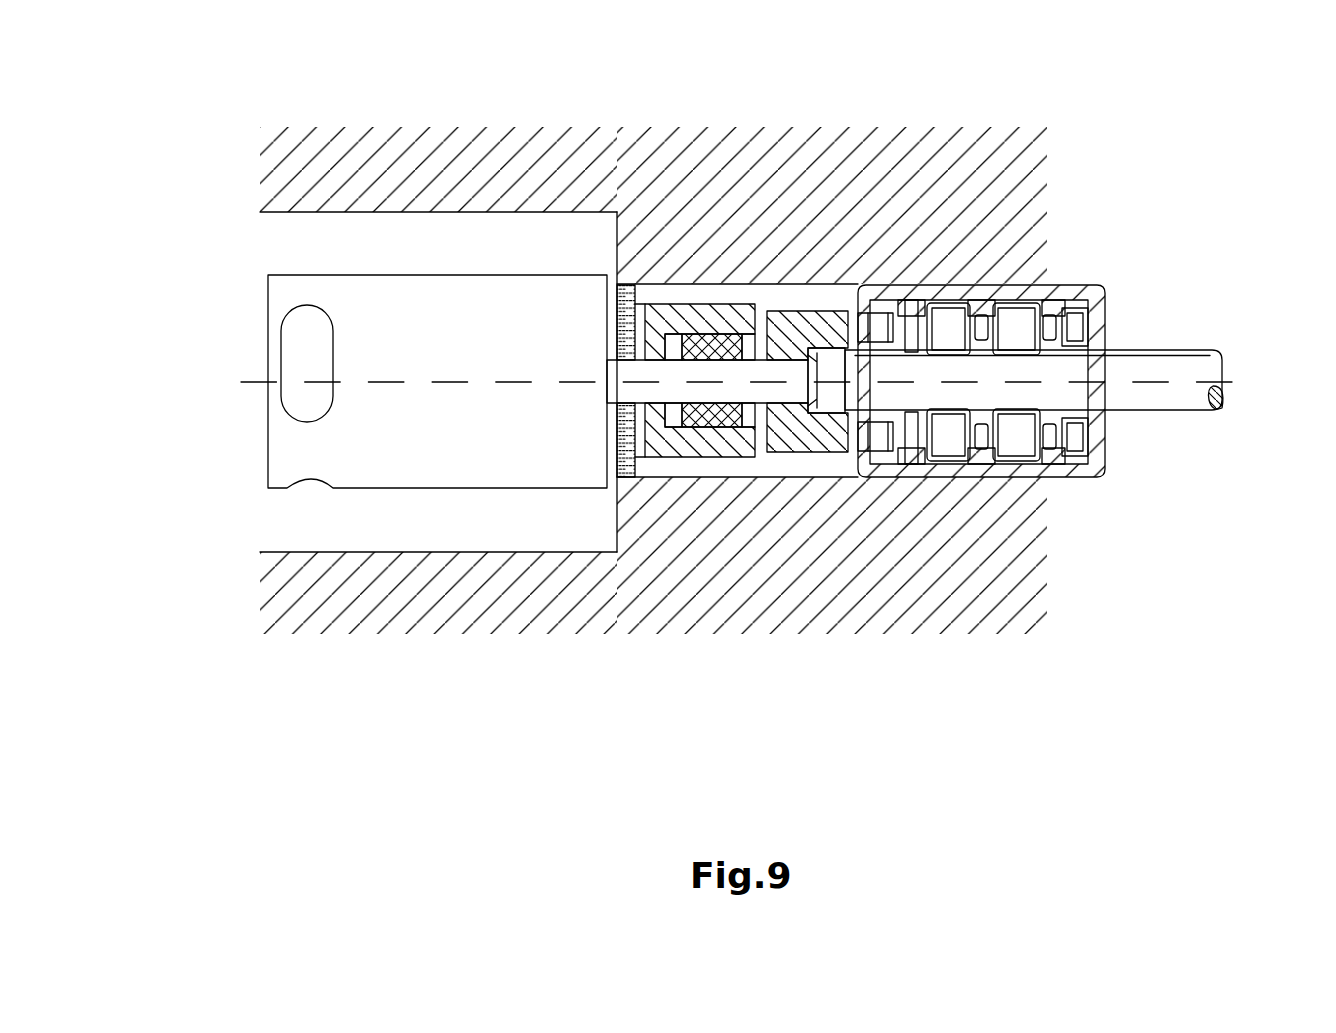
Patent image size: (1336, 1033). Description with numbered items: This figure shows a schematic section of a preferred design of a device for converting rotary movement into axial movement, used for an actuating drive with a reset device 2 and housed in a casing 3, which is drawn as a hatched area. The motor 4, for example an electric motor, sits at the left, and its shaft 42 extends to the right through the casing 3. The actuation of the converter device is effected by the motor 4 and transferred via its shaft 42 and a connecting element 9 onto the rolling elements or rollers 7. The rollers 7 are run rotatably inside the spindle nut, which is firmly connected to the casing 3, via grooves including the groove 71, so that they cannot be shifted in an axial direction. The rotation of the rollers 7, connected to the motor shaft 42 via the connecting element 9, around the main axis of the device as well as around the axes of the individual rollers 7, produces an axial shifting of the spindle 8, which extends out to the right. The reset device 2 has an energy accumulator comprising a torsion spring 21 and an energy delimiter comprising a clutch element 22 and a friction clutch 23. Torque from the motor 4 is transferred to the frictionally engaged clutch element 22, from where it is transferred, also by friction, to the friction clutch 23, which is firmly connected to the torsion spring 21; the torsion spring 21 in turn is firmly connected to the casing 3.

The reset device 2 is at (740, 110).
The casing 3 is at (374, 140).
The motor 4 is at (275, 433).
The rolling elements or rollers 7 is at (1090, 327).
The spindle 8 is at (1202, 378).
The connecting element 9 is at (825, 447).
The torsion spring 21 is at (627, 305).
The clutch element 22 is at (718, 442).
The friction clutch 23 is at (662, 447).
The shaft 42 is at (627, 368).
The groove 71 is at (1053, 447).